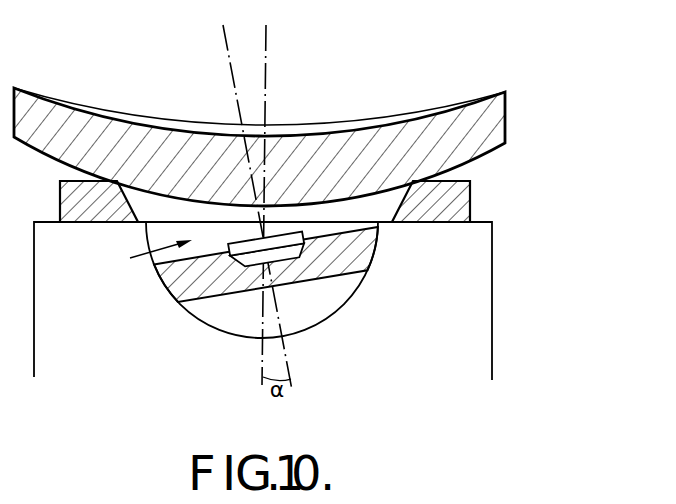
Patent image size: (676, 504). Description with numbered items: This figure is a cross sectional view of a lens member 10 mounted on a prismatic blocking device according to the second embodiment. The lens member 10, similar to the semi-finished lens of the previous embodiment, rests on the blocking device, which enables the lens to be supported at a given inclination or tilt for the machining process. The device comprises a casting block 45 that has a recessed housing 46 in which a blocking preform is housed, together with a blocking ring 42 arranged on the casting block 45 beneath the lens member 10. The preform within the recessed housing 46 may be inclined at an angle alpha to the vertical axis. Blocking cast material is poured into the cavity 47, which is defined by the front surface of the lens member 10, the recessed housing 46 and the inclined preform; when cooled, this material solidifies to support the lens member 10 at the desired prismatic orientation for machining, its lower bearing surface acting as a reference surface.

The lens member 10 is at (505, 122).
The blocking ring 42 is at (450, 203).
The casting block 45 is at (492, 308).
The recessed housing 46 is at (345, 303).
The cavity 47 is at (130, 258).